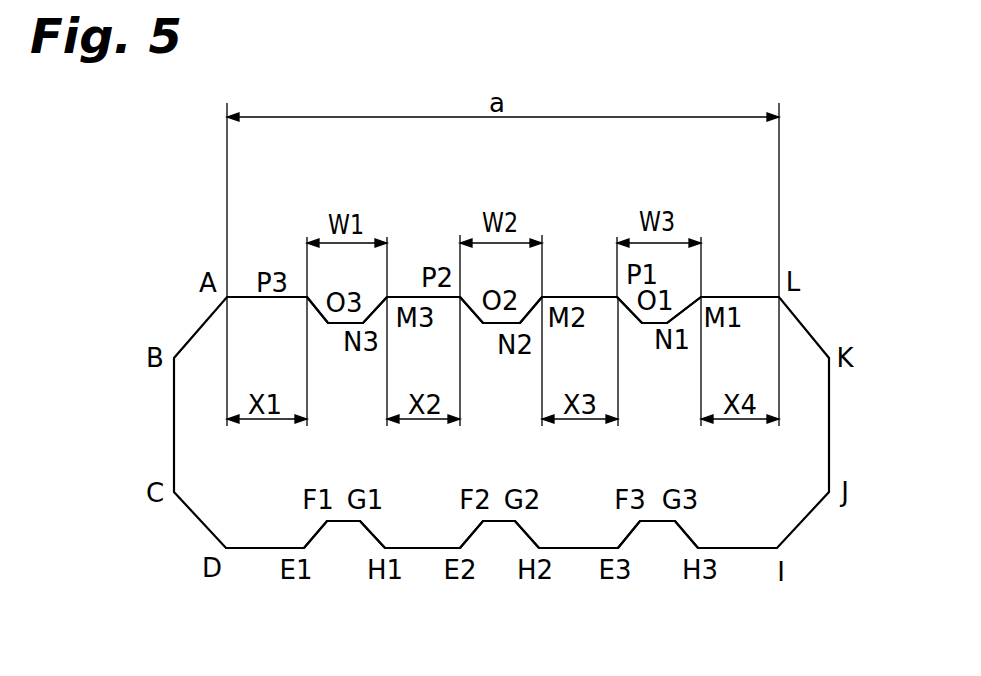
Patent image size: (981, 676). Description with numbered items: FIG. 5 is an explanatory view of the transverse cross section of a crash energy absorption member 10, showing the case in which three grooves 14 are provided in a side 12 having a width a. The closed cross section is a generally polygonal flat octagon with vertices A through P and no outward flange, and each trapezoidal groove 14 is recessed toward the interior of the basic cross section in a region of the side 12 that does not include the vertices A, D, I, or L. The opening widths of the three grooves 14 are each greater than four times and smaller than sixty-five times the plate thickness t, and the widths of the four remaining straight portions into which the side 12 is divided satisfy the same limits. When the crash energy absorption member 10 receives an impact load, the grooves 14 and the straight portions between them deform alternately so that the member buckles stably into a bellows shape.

The crash energy absorption member 10 is at (858, 302).
The long side 12 is at (740, 296).
The trapezoidal groove 14 is at (314, 303).